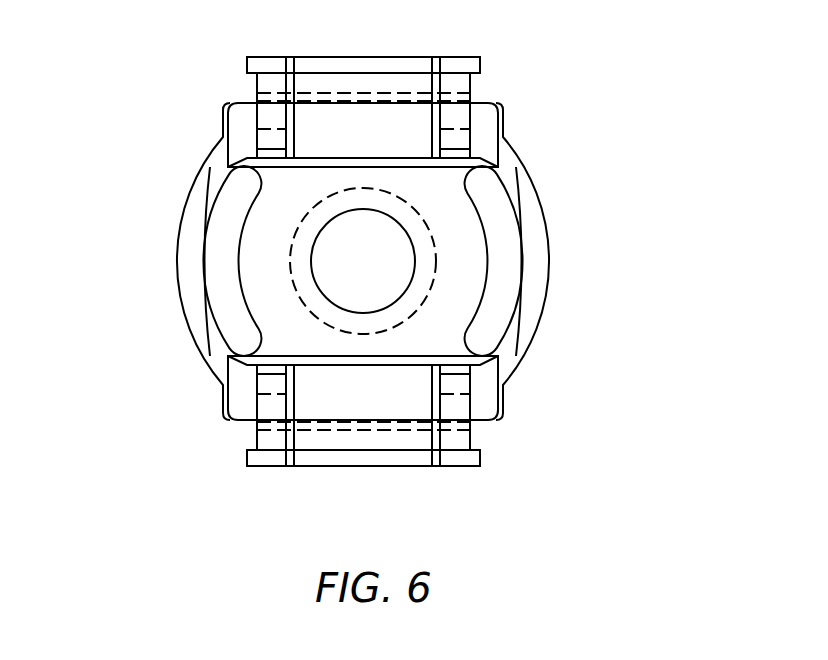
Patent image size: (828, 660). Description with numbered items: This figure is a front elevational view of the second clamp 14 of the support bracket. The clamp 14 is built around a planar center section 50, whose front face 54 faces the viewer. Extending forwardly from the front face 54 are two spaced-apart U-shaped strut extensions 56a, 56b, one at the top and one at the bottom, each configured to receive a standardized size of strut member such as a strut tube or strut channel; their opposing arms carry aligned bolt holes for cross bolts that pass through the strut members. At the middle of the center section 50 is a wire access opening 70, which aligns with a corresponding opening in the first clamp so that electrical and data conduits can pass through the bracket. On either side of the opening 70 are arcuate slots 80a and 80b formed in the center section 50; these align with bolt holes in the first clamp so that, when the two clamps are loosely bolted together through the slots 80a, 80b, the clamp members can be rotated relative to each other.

The second clamp 14 is at (427, 261).
The center section 50 is at (448, 261).
The front face 54 is at (475, 276).
The U-shaped strut extension 56a is at (437, 95).
The U-shaped strut extension 56b is at (456, 415).
The wire access opening 70 is at (248, 234).
The arcuate slot 80a is at (179, 289).
The arcuate slot 80b is at (580, 261).